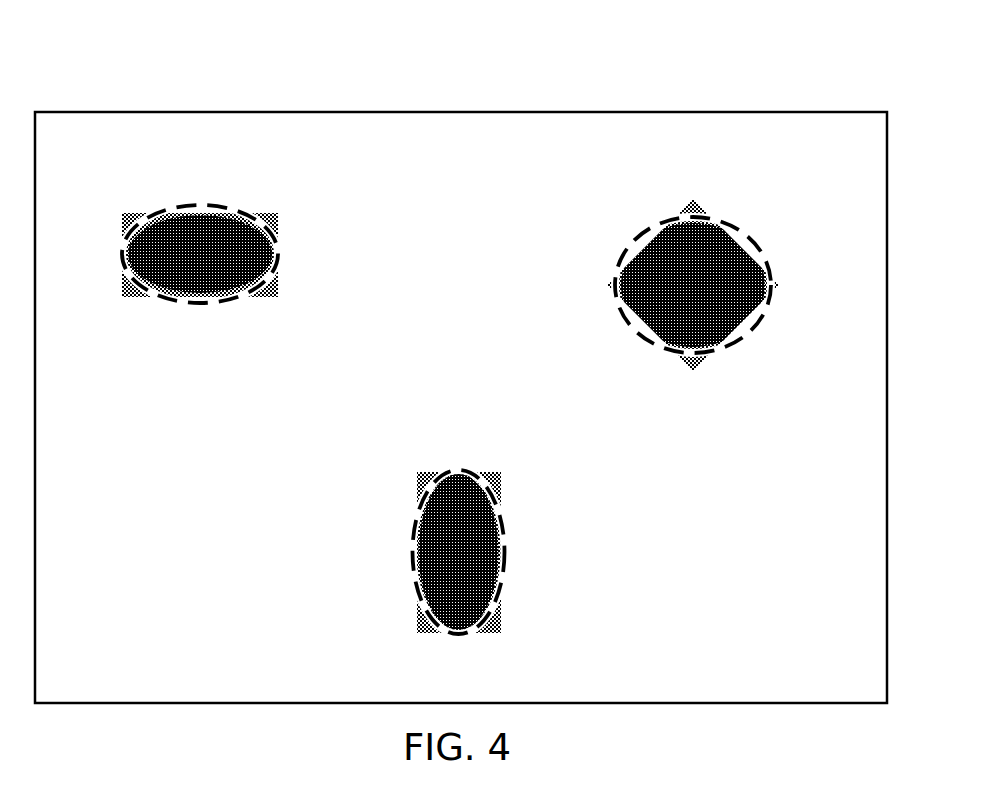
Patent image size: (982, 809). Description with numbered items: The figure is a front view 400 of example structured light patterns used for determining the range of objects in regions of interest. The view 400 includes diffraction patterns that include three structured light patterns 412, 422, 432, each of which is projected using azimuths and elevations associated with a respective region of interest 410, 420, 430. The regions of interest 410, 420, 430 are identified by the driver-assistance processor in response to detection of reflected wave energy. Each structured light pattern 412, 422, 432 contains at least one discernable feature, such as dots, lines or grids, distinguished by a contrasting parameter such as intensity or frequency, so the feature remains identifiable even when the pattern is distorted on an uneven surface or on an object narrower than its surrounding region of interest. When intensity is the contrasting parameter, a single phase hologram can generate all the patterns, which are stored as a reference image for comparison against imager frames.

The view 400 is at (186, 72).
The region of interest 410 is at (185, 205).
The structured light pattern 412 is at (130, 299).
The region of interest 420 is at (736, 230).
The structured light pattern 422 is at (701, 362).
The region of interest 430 is at (410, 565).
The structured light pattern 432 is at (502, 620).